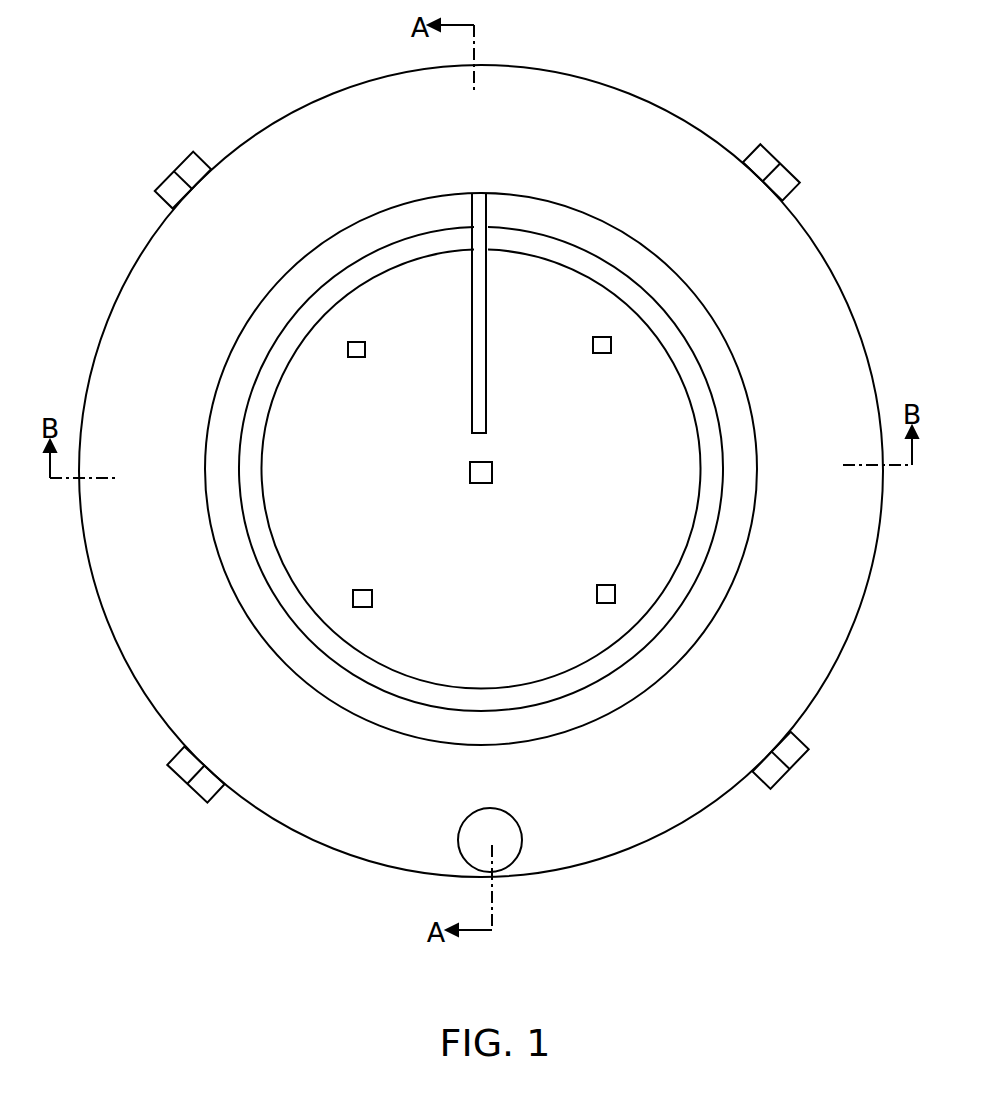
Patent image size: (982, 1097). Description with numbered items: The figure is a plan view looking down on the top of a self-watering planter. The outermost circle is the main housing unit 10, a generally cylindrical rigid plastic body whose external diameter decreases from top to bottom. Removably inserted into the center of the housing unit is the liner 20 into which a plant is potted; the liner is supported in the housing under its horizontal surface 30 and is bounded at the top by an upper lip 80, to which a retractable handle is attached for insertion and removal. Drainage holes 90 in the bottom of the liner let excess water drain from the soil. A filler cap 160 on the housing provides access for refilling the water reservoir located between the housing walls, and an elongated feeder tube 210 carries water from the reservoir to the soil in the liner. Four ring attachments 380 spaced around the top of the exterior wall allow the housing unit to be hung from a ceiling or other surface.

The main housing unit 10 is at (104, 330).
The liner 20 is at (262, 470).
The horizontal surface 30 is at (373, 259).
The upper lip 80 is at (643, 264).
The drainage holes 90 is at (492, 471).
The filler cap 160 is at (518, 824).
The feeder tube 210 is at (487, 334).
The ring attachments 380 is at (174, 171).